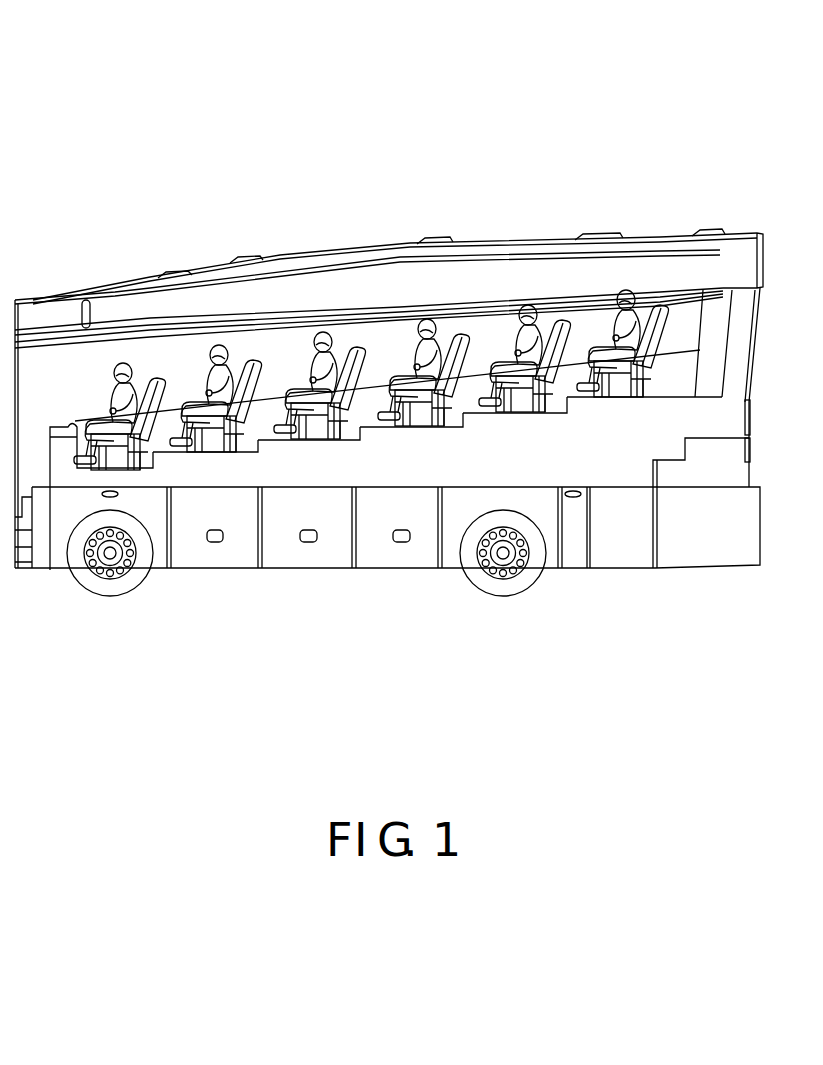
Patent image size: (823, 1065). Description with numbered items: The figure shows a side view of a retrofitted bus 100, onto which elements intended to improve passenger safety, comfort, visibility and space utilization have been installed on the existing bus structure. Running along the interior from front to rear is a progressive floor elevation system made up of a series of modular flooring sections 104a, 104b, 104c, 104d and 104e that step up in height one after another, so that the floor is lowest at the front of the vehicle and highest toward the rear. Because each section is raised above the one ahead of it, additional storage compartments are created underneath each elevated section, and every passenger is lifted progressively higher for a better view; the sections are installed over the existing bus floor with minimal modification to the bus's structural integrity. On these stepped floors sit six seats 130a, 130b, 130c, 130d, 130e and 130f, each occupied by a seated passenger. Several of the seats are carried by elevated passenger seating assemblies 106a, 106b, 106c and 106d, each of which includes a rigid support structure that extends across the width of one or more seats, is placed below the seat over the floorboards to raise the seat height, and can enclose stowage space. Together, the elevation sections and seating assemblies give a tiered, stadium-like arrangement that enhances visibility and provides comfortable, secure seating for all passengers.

The vehicle with tiered passenger seating 100 is at (128, 108).
The floor elevation component 104a is at (203, 460).
The floor elevation component 104b is at (278, 445).
The floor elevation component 104c is at (408, 435).
The floor elevation component 104d is at (513, 413).
The floor elevation component 104e is at (577, 404).
The elevated passenger seating assembly 106a is at (333, 420).
The elevated passenger seating assembly 106b is at (437, 395).
The elevated passenger seating assembly 106c is at (533, 412).
The elevated passenger seating assembly 106d is at (640, 375).
The seat 130a is at (145, 388).
The seat 130b is at (250, 372).
The seat 130c is at (352, 362).
The seat 130d is at (455, 348).
The seat 130e is at (557, 335).
The seat 130f is at (655, 328).